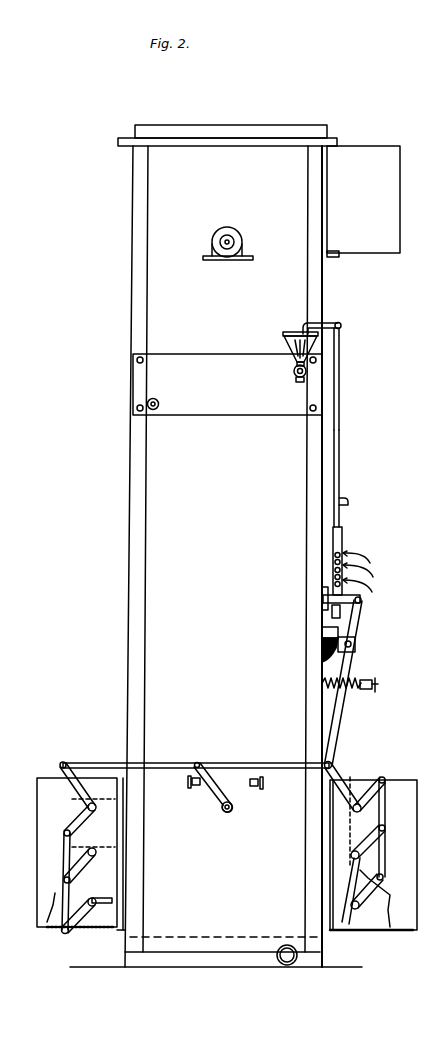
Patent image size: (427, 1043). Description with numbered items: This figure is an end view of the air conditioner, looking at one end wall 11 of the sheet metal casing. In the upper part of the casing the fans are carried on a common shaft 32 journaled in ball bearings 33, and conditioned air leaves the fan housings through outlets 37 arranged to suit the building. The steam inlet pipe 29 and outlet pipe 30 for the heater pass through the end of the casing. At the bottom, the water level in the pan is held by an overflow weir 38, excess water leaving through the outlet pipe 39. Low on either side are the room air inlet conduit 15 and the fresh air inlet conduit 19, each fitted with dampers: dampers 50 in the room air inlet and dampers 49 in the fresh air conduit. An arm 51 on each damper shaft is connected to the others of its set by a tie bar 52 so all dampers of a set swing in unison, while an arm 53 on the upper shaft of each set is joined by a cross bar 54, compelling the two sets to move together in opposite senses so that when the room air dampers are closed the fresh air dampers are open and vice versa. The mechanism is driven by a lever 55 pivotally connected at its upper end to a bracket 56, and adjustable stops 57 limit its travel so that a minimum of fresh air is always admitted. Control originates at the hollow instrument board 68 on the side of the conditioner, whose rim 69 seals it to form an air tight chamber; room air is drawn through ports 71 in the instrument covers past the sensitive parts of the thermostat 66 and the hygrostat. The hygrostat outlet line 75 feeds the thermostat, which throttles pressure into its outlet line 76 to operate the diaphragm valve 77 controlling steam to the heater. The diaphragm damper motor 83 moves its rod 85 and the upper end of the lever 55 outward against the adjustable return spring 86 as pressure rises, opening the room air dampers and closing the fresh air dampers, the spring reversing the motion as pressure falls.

The end wall 11 is at (216, 546).
The inlet conduit 15 is at (408, 932).
The air inlet conduit 19 is at (50, 778).
The steam inlet pipe 29 is at (298, 379).
The outlet pipe 30 is at (159, 405).
The shaft 32 is at (232, 236).
The ball bearings 33 is at (245, 246).
The outlets 37 is at (363, 201).
The overflow weir 38 is at (186, 936).
The outlet pipe 39 is at (287, 966).
The dampers 49 is at (108, 896).
The dampers 50 is at (352, 932).
The arm 51 is at (98, 858).
The tie bar 52 is at (65, 934).
The arm 53 is at (88, 773).
The cross bar 54 is at (157, 762).
The lever 55 is at (335, 744).
The bracket 56 is at (361, 601).
The adjustable stops 57 is at (190, 788).
The thermostat 66 is at (343, 529).
The instrument board 68 is at (339, 446).
The rim 69 is at (332, 377).
The ports 71 is at (334, 563).
The hygrostat outlet line 75 is at (349, 501).
The thermostat outlet line 76 is at (340, 343).
The diaphragm valve 77 is at (290, 338).
The diaphragm damper motor 83 is at (325, 638).
The rod 85 is at (357, 644).
The adjustable return spring 86 is at (327, 684).